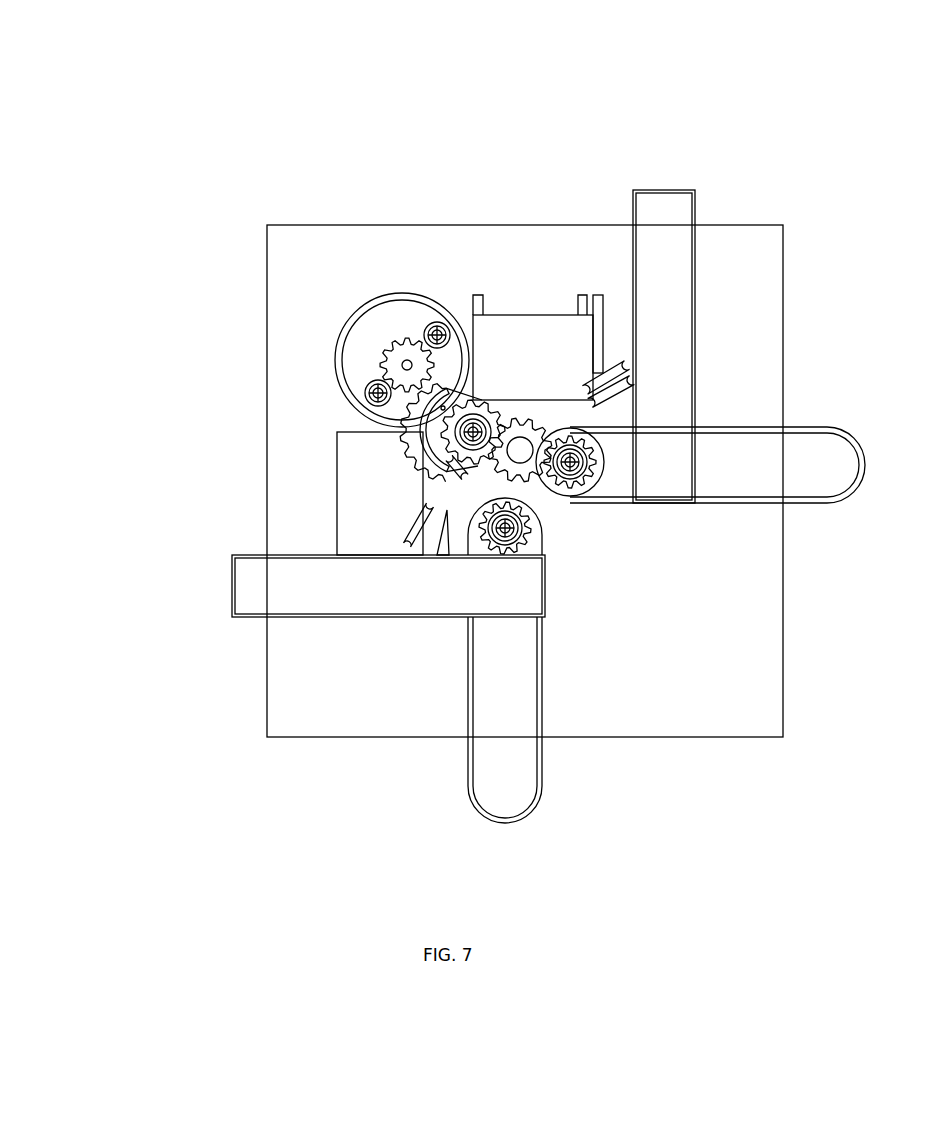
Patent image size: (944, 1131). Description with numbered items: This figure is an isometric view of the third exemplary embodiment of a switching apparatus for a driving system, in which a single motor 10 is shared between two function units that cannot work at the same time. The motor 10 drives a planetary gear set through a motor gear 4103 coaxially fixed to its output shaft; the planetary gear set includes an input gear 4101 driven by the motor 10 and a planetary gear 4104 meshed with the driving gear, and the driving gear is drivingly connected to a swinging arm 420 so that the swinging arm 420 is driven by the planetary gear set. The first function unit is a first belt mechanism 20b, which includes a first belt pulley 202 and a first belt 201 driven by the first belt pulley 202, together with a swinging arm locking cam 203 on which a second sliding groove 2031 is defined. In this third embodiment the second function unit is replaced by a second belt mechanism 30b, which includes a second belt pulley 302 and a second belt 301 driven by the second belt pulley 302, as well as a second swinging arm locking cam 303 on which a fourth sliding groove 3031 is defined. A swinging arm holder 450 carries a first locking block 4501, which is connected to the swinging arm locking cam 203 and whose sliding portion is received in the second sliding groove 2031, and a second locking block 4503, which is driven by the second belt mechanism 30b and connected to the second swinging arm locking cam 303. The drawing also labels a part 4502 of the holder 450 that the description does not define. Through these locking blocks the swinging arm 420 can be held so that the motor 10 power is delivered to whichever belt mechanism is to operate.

The motor 10 is at (405, 337).
The first belt mechanism 20b is at (770, 608).
The first belt 201 is at (735, 503).
The first belt pulley 202 is at (570, 497).
The swinging arm locking cam 203 is at (707, 470).
The second sliding groove 2031 is at (617, 383).
The second belt mechanism 30b is at (453, 858).
The second belt 301 is at (468, 768).
The second belt pulley 302 is at (468, 545).
The second swinging arm locking cam 303 is at (380, 663).
The fourth sliding groove 3031 is at (420, 517).
The swinging arm 420 is at (466, 390).
The input gear 4101 is at (410, 440).
The motor gear 4103 is at (383, 358).
The planetary gear 4104 is at (522, 422).
The swinging arm holder 450 is at (320, 15).
The first locking block 4501 is at (535, 347).
The support bar 4502 is at (670, 205).
The second locking block 4503 is at (350, 458).